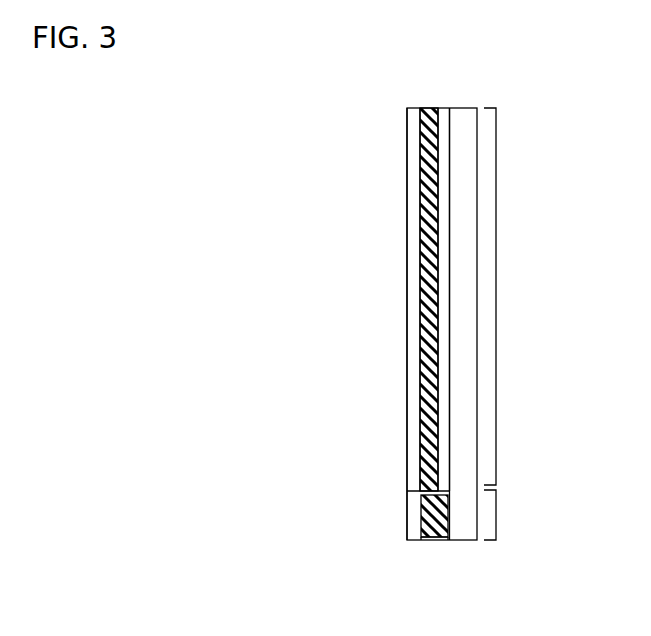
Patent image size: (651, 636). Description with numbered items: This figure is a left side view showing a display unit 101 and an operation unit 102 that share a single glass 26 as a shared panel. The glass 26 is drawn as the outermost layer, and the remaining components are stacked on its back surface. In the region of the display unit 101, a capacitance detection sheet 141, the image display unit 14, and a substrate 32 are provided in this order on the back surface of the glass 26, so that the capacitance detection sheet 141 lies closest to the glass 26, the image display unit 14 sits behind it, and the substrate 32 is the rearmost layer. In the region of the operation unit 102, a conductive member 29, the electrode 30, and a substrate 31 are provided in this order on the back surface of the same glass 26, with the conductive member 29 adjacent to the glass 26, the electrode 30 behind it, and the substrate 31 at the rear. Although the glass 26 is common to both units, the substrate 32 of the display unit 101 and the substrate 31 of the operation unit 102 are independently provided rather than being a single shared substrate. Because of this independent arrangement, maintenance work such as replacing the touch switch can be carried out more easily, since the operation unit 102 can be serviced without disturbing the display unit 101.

The image display unit 14 is at (431, 107).
The capacitance detection sheet 141 is at (444, 107).
The substrate 32 is at (407, 293).
The substrate 31 is at (407, 518).
The display unit 101 is at (496, 298).
The operation unit 102 is at (496, 515).
The electrode 30 is at (422, 540).
The conductive member 29 is at (436, 540).
The glass 26 is at (468, 540).